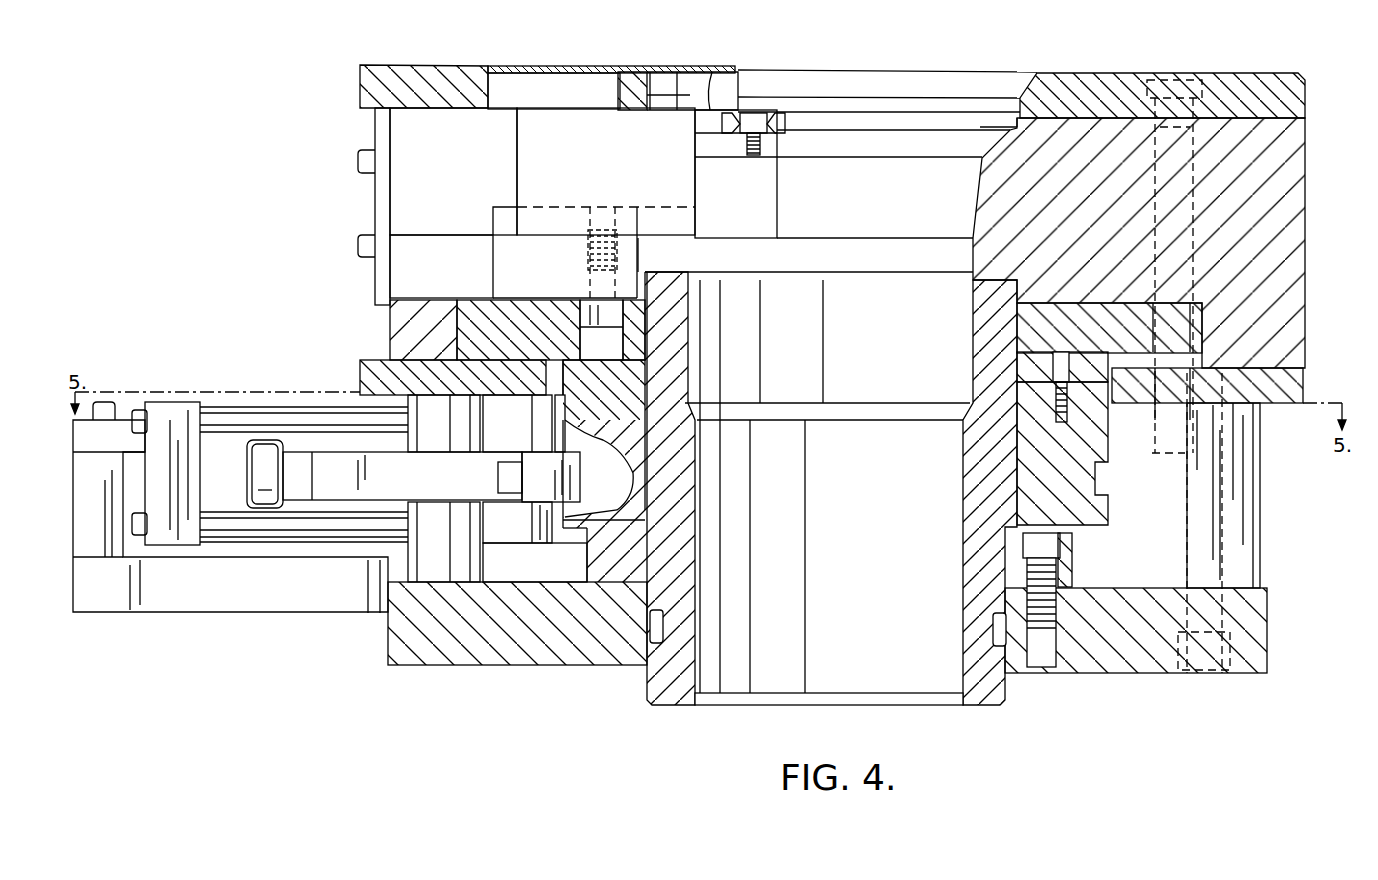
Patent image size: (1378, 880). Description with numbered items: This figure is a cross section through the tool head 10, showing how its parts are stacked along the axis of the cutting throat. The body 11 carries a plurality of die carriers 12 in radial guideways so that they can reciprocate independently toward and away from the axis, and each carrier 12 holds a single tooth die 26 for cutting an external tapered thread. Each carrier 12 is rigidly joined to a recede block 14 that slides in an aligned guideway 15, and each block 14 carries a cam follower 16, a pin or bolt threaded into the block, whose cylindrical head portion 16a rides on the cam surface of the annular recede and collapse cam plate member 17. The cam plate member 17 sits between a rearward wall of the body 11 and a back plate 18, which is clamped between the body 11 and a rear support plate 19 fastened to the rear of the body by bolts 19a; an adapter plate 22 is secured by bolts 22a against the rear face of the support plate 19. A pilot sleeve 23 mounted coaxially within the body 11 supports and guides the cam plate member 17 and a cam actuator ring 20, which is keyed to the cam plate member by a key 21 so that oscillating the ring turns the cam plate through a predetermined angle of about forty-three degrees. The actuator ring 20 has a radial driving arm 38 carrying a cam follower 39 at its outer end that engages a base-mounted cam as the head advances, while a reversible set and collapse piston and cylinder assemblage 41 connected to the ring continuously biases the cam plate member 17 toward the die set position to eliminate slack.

The head 10 is at (1303, 74).
The body 11 is at (1306, 233).
The die carriers 12 is at (560, 120).
The recede blocks 14 is at (492, 262).
The guideways 15 is at (437, 206).
The cam follower 16 is at (590, 278).
The cylindrical head portion 16a is at (608, 316).
The recede and collapse cam plate member 17 is at (467, 326).
The back plate 18 is at (395, 366).
The rear support plate 19 is at (1273, 519).
The bolts 19a is at (1165, 72).
The cam actuator ring 20 is at (1070, 489).
The key 21 is at (1100, 360).
The adapter plate 22 is at (1246, 618).
The bolts 22a is at (1207, 675).
The pilot sleeve 23 is at (985, 706).
The dies 26 is at (745, 112).
The radial driving arm 38 is at (343, 490).
The cam follower 39 is at (267, 500).
The reversible set and collapse piston and cylinder assemblage 41 is at (217, 507).